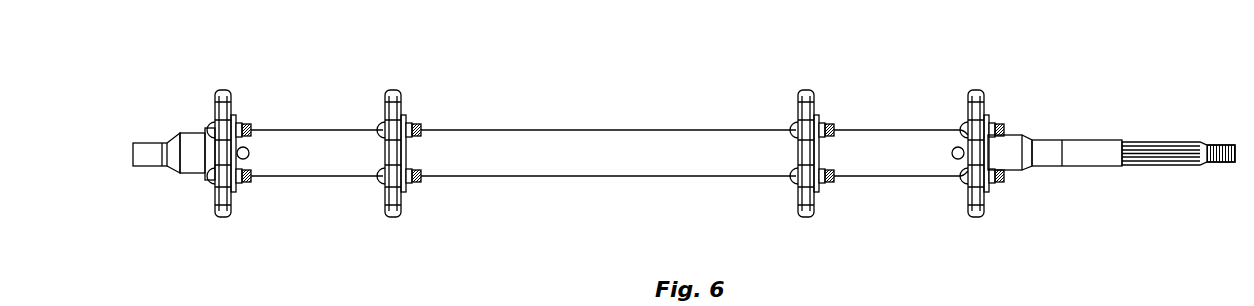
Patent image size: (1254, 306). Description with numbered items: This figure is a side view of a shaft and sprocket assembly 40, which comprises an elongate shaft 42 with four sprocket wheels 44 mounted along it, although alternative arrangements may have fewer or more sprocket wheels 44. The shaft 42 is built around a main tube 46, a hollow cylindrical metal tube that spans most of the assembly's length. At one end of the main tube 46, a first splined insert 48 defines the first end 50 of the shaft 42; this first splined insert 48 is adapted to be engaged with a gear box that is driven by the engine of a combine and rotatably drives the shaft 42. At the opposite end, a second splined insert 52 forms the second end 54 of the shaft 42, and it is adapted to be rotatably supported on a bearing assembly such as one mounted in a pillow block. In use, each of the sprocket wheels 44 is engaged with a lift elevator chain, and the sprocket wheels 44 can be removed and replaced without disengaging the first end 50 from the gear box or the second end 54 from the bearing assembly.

The shaft and sprocket assembly 40 is at (877, 104).
The shaft 42 is at (307, 129).
The sprocket wheel 44 is at (223, 89).
The main tube 46 is at (720, 178).
The first splined insert 48 is at (1091, 138).
The first end 50 is at (1217, 137).
The second splined insert 52 is at (145, 142).
The second end 54 is at (168, 126).